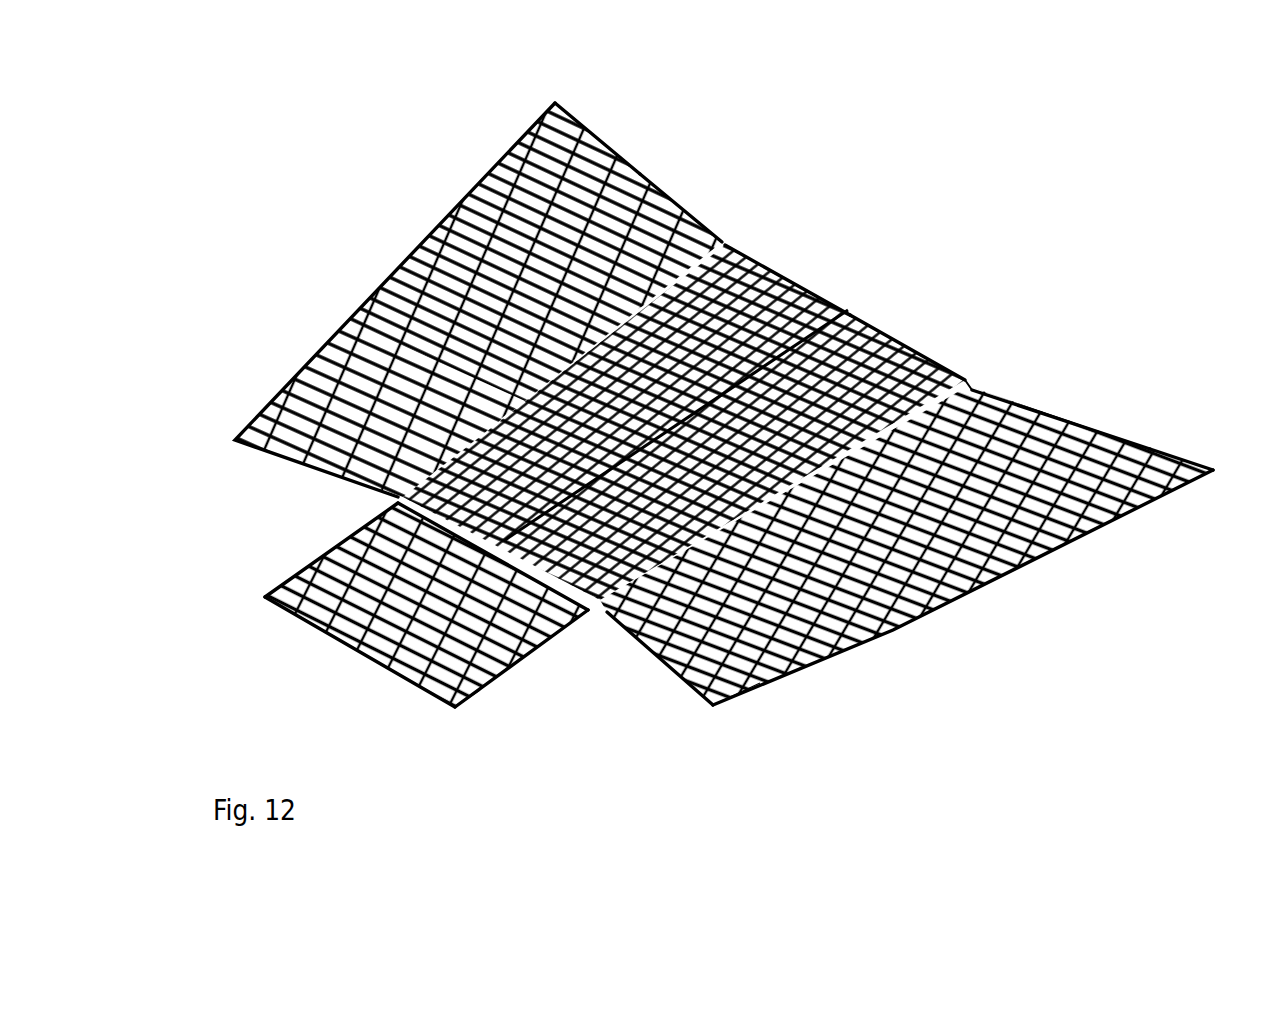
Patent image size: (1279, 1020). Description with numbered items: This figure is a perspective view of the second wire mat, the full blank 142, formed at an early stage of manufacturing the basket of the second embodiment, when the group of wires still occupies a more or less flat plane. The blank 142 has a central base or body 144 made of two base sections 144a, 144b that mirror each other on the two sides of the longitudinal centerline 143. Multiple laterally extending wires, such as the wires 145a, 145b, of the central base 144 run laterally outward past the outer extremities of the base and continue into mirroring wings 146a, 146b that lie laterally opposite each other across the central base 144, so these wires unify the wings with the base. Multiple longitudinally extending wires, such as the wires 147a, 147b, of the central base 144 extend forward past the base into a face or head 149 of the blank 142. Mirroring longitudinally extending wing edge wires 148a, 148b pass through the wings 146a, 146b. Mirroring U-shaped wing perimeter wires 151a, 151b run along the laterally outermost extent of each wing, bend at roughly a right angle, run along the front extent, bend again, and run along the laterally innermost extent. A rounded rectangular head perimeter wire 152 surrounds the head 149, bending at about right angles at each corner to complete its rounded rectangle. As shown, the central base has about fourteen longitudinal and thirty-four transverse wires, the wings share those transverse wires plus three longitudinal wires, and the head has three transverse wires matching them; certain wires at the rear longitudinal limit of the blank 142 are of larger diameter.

The blank 142 is at (847, 310).
The longitudinal centerline 143 is at (318, 668).
The central base or body 144 is at (930, 352).
The base section 144a is at (818, 298).
The base section 144b is at (947, 363).
The laterally extending wire 145a is at (727, 672).
The laterally extending wire 145b is at (740, 647).
The wing 146a is at (660, 212).
The wing 146b is at (1180, 465).
The longitudinally extending wire 147a is at (345, 590).
The longitudinally extending wire 147b is at (352, 648).
The wing edge wire 148a is at (592, 170).
The wing edge wire 148b is at (1125, 445).
The head 149 is at (485, 690).
The wing perimeter wire 151a is at (440, 232).
The wing perimeter wire 151b is at (947, 600).
The head perimeter wire 152 is at (530, 655).